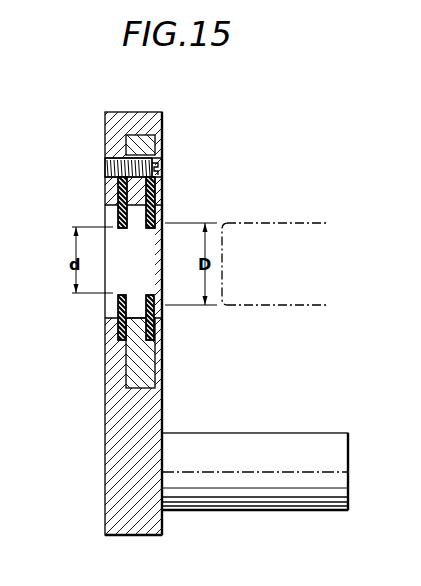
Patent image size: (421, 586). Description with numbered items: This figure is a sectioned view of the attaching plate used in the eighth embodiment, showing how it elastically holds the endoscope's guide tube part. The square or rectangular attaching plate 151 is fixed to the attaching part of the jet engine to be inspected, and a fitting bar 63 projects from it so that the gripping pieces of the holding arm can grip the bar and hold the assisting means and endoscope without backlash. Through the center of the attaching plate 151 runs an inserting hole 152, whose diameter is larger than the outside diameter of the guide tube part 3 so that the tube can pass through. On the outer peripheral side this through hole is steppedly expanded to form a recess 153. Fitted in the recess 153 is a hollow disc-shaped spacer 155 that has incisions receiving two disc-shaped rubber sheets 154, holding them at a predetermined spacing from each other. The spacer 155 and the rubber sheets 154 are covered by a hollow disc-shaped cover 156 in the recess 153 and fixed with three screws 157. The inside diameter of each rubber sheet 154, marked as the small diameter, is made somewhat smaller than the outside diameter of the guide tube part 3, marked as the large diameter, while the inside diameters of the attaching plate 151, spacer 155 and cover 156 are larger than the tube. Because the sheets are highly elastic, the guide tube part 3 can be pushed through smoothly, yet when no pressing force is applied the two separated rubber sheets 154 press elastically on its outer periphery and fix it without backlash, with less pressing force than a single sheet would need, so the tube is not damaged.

The guide tube part 3 is at (237, 222).
The fitting bar 63 is at (225, 498).
The attaching plate 151 is at (154, 417).
The inserting hole 152 is at (168, 214).
The recess 153 is at (146, 383).
The rubber sheet 154 is at (149, 316).
The spacer 155 is at (135, 118).
The cover 156 is at (164, 140).
The screw 157 is at (106, 164).